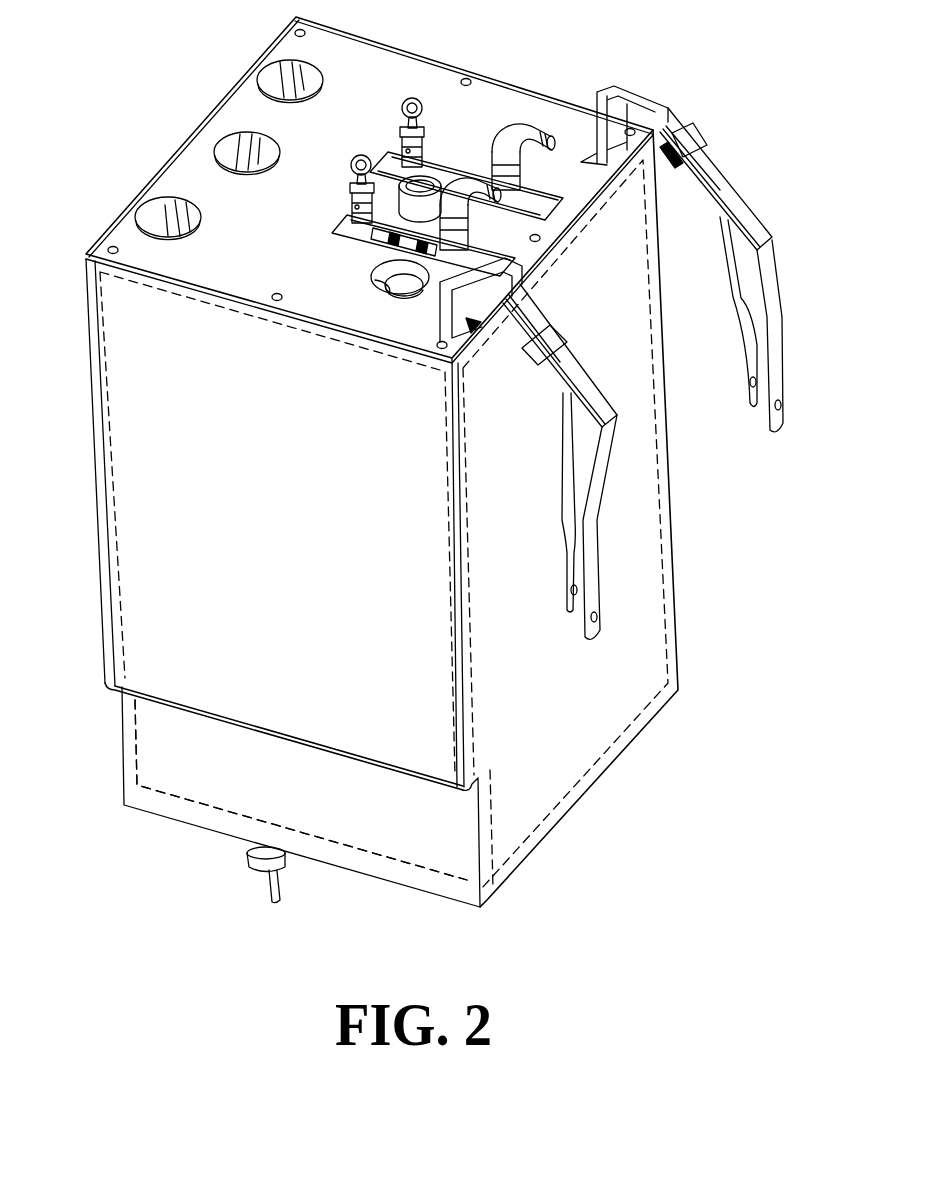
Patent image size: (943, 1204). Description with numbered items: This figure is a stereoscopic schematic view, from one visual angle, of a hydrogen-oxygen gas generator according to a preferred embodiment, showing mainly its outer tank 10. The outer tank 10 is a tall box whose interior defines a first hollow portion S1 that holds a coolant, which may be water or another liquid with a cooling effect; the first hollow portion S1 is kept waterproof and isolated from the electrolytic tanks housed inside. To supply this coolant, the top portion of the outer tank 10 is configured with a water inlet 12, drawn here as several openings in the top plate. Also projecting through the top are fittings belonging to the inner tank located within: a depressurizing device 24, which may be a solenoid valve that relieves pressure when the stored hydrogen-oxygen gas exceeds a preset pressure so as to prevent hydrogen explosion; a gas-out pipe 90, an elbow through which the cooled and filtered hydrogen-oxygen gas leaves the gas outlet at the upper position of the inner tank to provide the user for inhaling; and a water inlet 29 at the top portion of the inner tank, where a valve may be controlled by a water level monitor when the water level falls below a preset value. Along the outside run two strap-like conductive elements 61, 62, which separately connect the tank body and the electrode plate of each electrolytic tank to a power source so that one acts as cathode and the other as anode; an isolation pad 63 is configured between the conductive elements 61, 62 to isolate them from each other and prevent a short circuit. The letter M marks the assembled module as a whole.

The outer tank 10 is at (672, 606).
The water inlet 12 is at (268, 58).
The depressurizing device 24 is at (424, 148).
The water inlet 29 is at (380, 276).
The conductive element 61 is at (747, 350).
The conductive element 62 is at (768, 418).
The isolation pad 63 is at (705, 146).
The gas-out pipe 90 is at (527, 127).
The first hollow portion S1 is at (203, 802).
The module M is at (792, 52).